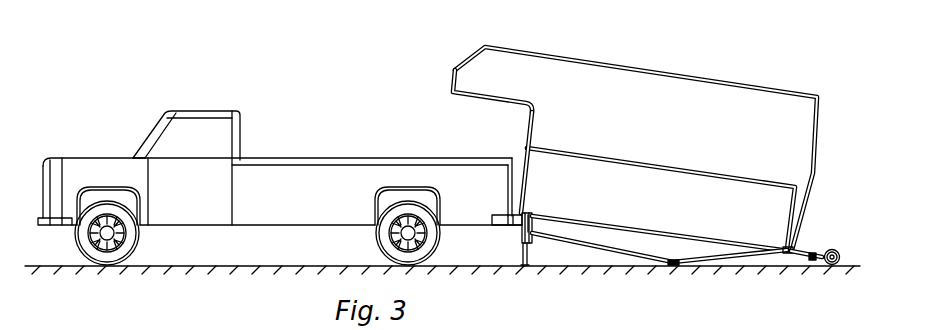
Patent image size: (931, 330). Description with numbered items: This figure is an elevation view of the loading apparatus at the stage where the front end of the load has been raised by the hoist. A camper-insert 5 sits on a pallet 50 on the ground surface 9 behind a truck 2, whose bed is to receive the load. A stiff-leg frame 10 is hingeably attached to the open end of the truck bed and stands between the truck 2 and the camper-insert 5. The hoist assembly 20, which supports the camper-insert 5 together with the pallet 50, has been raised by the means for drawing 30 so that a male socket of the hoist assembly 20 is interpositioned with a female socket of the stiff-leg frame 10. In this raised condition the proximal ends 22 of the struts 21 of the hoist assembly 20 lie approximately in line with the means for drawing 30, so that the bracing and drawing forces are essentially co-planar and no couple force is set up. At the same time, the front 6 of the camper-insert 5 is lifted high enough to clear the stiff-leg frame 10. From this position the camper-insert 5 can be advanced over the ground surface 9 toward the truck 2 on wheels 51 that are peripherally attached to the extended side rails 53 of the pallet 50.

The truck 2 is at (100, 158).
The camper-insert 5 is at (670, 64).
The front 6 is at (523, 135).
The ground surface 9 is at (173, 270).
The stiff-leg frame 10 is at (518, 251).
The hoist assembly 20 is at (632, 257).
The struts 21 is at (573, 246).
The proximal ends 22 is at (533, 236).
The means for drawing 30 is at (517, 236).
The pallet 50 is at (716, 243).
The wheels 51 is at (839, 253).
The extended side rails 53 is at (803, 252).